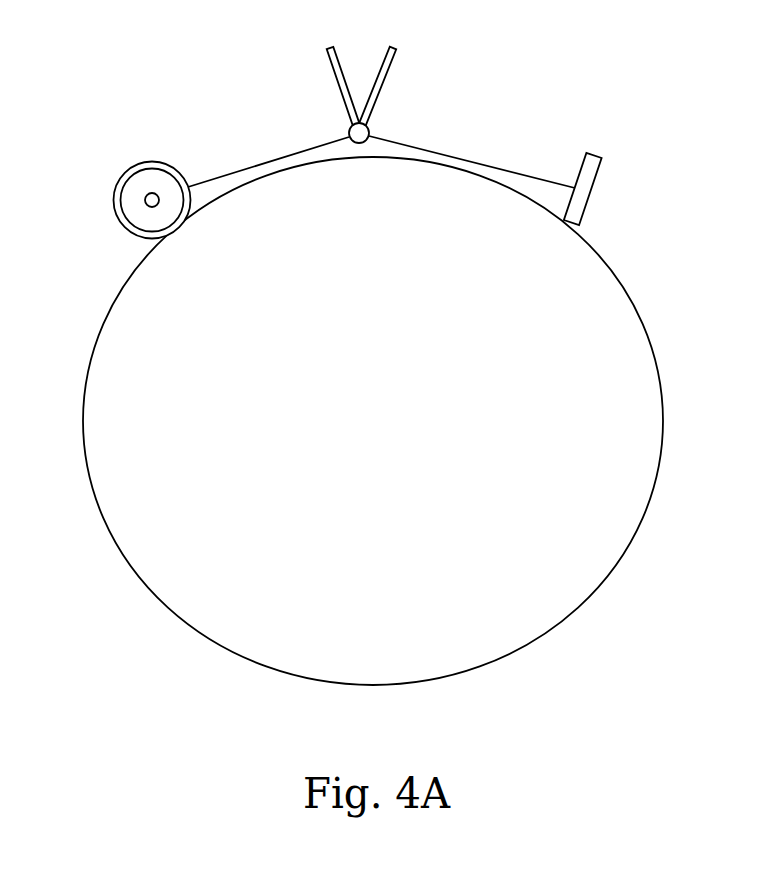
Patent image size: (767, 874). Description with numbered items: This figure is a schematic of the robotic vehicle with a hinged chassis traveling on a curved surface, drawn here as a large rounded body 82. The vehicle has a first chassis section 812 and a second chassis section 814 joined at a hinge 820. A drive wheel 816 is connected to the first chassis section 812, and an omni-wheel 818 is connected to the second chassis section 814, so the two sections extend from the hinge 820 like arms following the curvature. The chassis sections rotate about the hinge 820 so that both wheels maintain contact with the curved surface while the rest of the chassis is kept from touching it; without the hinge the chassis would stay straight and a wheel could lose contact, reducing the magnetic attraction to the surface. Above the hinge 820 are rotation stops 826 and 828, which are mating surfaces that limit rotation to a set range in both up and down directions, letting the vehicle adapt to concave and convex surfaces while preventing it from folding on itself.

The drum 82 is at (662, 388).
The first chassis section 812 is at (240, 172).
The second chassis section 814 is at (508, 168).
The drive wheel 816 is at (117, 180).
The omni-wheel 818 is at (597, 175).
The hinge 820 is at (370, 130).
The rotation stop 826 is at (333, 73).
The rotation stop 828 is at (395, 62).